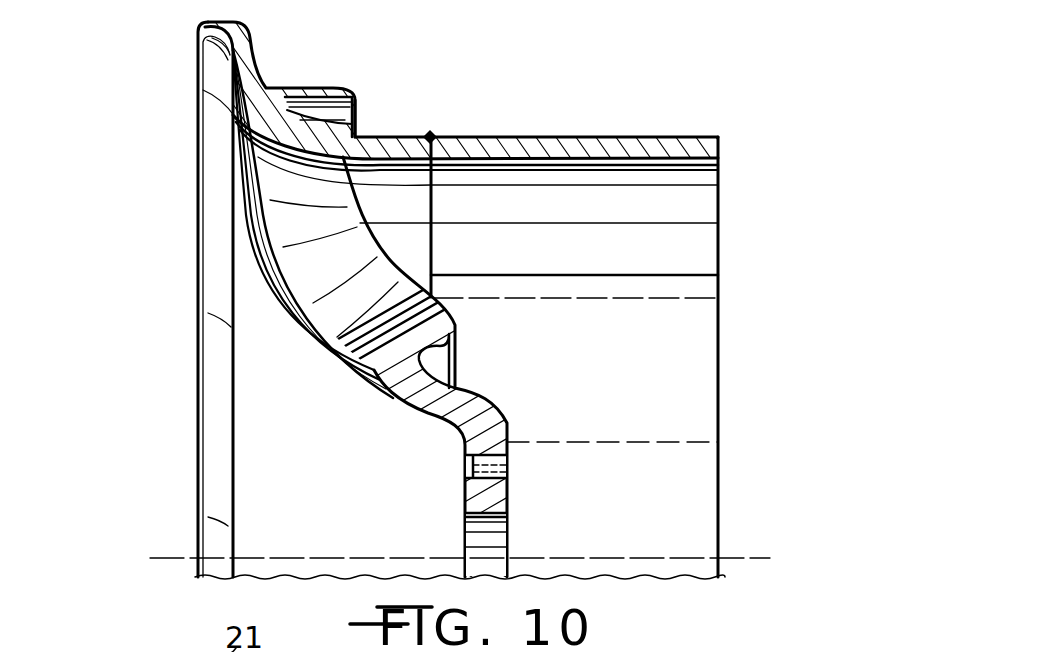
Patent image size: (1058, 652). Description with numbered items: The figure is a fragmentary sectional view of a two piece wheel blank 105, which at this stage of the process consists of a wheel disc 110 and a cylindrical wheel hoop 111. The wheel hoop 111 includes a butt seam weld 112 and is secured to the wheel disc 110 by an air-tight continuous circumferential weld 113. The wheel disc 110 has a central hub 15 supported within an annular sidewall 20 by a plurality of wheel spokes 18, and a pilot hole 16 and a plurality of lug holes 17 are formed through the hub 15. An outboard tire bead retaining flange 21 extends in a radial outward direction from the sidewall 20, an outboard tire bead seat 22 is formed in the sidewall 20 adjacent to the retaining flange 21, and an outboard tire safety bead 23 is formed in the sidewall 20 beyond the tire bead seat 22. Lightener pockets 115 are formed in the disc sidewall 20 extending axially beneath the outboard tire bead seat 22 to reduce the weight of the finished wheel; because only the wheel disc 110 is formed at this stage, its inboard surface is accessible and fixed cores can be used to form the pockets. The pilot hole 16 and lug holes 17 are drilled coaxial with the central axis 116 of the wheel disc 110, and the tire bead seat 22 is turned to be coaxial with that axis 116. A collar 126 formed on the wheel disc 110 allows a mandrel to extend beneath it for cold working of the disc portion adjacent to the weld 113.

The central hub 15 is at (500, 418).
The pilot hole 16 is at (505, 547).
The lug holes 17 is at (517, 465).
The wheel spokes 18 is at (397, 263).
The annular sidewall 20 is at (277, 133).
The outboard tire bead retaining flange 21 is at (236, 22).
The outboard tire bead seat 22 is at (288, 90).
The outboard tire safety bead 23 is at (338, 88).
The two piece wheel blank 105 is at (535, 90).
The wheel disc 110 is at (190, 419).
The cylindrical wheel hoop 111 is at (644, 150).
The butt seam weld 112 is at (610, 275).
The air-tight continuous circumferential weld 113 is at (429, 131).
The lightener pockets 115 is at (368, 103).
The central axis 116 is at (738, 556).
The collar 126 is at (353, 176).